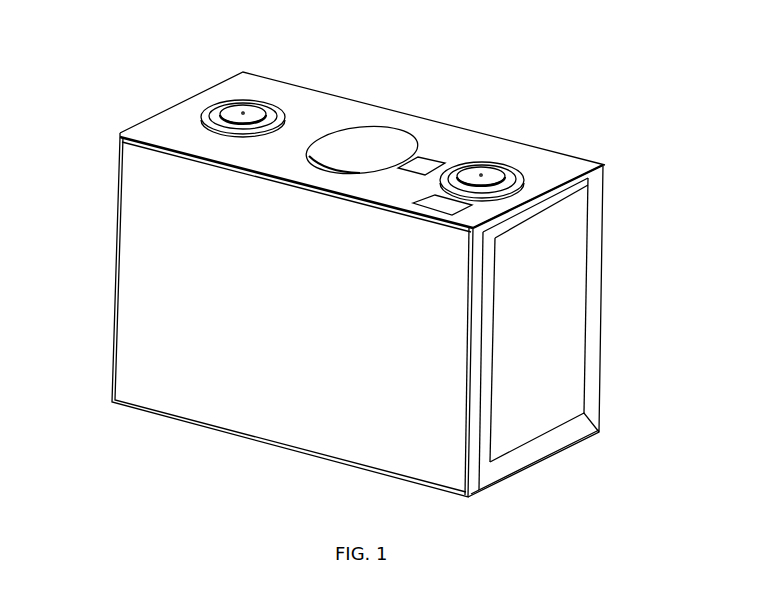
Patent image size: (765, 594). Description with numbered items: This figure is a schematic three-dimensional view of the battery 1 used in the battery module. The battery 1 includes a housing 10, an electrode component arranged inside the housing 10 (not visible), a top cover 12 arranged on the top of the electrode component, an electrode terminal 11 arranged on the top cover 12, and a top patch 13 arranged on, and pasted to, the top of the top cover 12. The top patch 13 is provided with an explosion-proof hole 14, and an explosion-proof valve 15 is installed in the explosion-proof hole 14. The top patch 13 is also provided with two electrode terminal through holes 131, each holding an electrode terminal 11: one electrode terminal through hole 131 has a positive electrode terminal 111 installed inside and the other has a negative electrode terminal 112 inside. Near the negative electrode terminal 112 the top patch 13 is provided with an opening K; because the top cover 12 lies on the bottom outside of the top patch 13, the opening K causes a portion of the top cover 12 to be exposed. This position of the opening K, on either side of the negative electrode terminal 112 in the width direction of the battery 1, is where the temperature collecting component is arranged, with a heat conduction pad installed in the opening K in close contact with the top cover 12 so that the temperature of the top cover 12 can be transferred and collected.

The battery 1 is at (618, 232).
The housing 10 is at (143, 237).
The electrode terminal 11 is at (235, 110).
The positive electrode terminal 111 is at (252, 113).
The negative electrode terminal 112 is at (490, 173).
The top cover 12 is at (145, 143).
The top patch 13 is at (147, 132).
The electrode terminal through hole 131 is at (210, 118).
The explosion-proof hole 14 is at (310, 152).
The explosion-proof valve 15 is at (373, 137).
The opening K is at (452, 208).